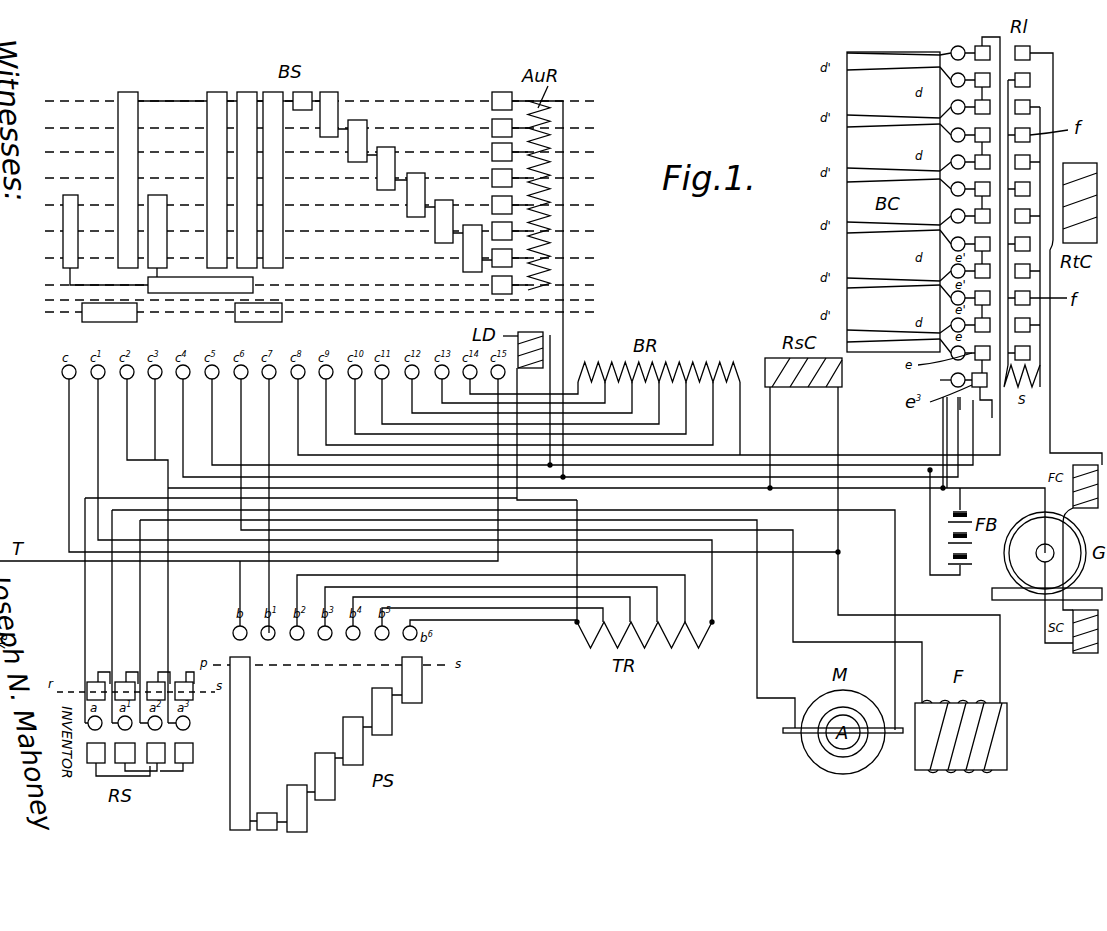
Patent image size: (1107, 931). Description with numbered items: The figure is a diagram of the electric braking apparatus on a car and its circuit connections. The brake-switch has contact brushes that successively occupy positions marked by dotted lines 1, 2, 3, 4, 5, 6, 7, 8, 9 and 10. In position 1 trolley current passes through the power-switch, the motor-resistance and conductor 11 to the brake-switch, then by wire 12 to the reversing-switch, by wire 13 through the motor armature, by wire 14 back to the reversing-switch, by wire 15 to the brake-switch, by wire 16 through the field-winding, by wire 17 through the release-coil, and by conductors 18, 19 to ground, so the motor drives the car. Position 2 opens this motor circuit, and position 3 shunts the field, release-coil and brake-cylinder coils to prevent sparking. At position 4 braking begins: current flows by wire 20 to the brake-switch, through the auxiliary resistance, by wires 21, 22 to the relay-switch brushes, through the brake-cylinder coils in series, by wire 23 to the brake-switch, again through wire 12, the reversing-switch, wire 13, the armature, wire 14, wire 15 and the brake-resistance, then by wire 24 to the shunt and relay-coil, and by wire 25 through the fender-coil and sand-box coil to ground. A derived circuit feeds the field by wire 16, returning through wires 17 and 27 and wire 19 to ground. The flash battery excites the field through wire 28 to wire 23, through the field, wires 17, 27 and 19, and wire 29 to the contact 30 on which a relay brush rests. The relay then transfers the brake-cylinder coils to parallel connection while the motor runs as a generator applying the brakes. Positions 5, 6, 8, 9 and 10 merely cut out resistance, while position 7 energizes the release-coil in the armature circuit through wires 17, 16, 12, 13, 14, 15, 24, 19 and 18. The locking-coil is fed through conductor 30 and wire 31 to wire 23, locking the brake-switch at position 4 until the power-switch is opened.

The brake-switch position line 1 1 is at (318, 320).
The brake-switch position line 2 2 is at (318, 315).
The brake-switch position line 3 3 is at (318, 285).
The brake-switch position line 4 4 is at (318, 258).
The brake-switch position line 5 5 is at (318, 231).
The brake-switch position line 6 6 is at (318, 205).
The brake-switch position line 7 7 is at (318, 178).
The brake-switch position line 8 8 is at (318, 152).
The brake-switch position line 9 9 is at (318, 128).
The brake-switch position line 10 10 is at (318, 101).
The conductor 11 is at (404, 501).
The wire 12 is at (156, 551).
The wire 13 is at (757, 663).
The wire 14 is at (502, 612).
The wire 15 is at (289, 551).
The wire 16 is at (575, 541).
The wire 17 is at (843, 410).
The conductor 18 is at (771, 438).
The conductor 19 is at (606, 520).
The wire 20 is at (500, 498).
The wire 21 is at (572, 290).
The wire 22 is at (602, 429).
The wire 23 is at (596, 432).
The wire 24 is at (660, 248).
The wire 25 is at (1048, 404).
The wire 27 is at (471, 474).
The wire 28 is at (950, 577).
The wire 29 is at (660, 443).
The contact 30 is at (741, 497).
The wire 31 is at (545, 401).